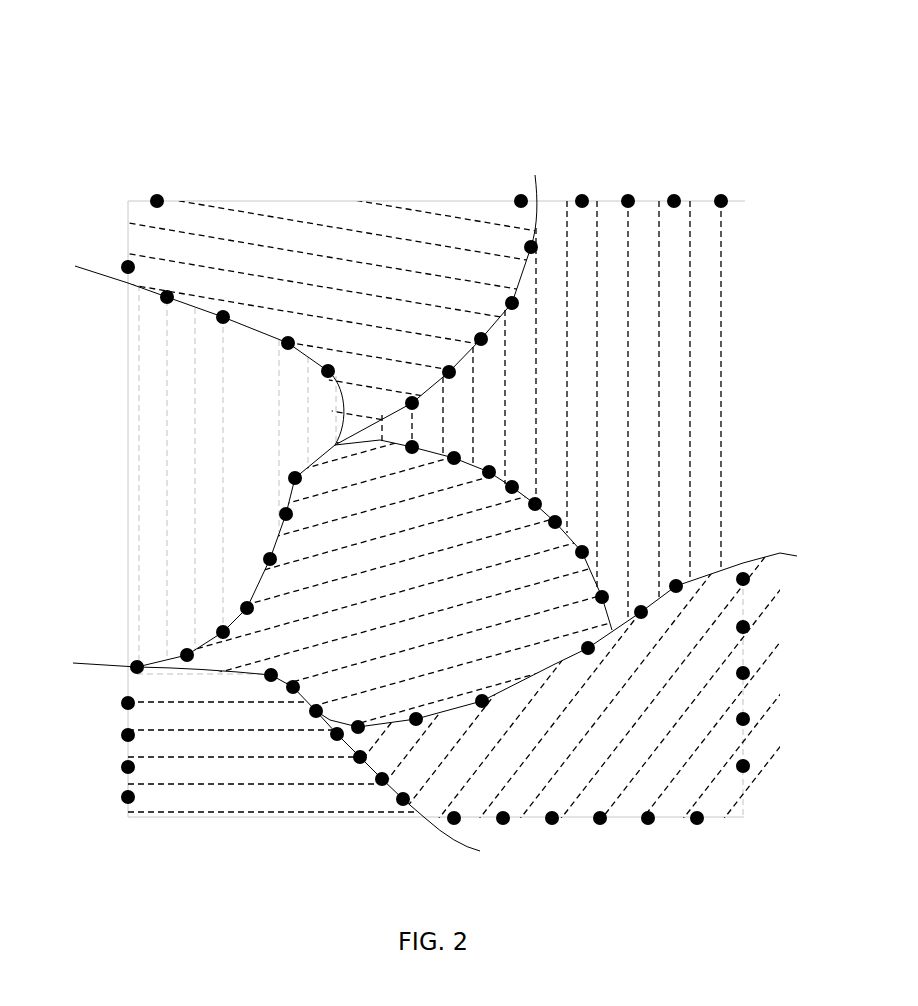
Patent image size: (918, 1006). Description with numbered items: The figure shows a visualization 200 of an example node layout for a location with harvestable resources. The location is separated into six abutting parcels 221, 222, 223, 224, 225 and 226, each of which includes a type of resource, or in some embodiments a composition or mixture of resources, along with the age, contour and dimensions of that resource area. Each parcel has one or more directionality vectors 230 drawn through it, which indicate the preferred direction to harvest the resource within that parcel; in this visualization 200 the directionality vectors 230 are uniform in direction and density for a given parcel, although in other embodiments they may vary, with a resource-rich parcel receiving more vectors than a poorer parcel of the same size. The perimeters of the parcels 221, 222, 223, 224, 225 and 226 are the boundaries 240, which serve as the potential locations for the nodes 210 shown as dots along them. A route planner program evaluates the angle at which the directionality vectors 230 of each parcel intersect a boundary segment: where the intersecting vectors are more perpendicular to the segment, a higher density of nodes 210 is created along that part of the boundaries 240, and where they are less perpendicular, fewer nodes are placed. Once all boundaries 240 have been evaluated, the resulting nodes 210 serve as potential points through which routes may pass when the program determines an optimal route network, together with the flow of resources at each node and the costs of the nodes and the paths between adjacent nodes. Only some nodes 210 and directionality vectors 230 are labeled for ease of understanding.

The visualization 200 is at (158, 134).
The nodes 210 is at (721, 201).
The parcel 221 is at (317, 299).
The parcel 222 is at (195, 478).
The parcel 223 is at (204, 780).
The parcel 224 is at (388, 601).
The parcel 225 is at (608, 410).
The parcel 226 is at (588, 765).
The directionality vectors 230 is at (659, 449).
The boundaries 240 is at (100, 270).